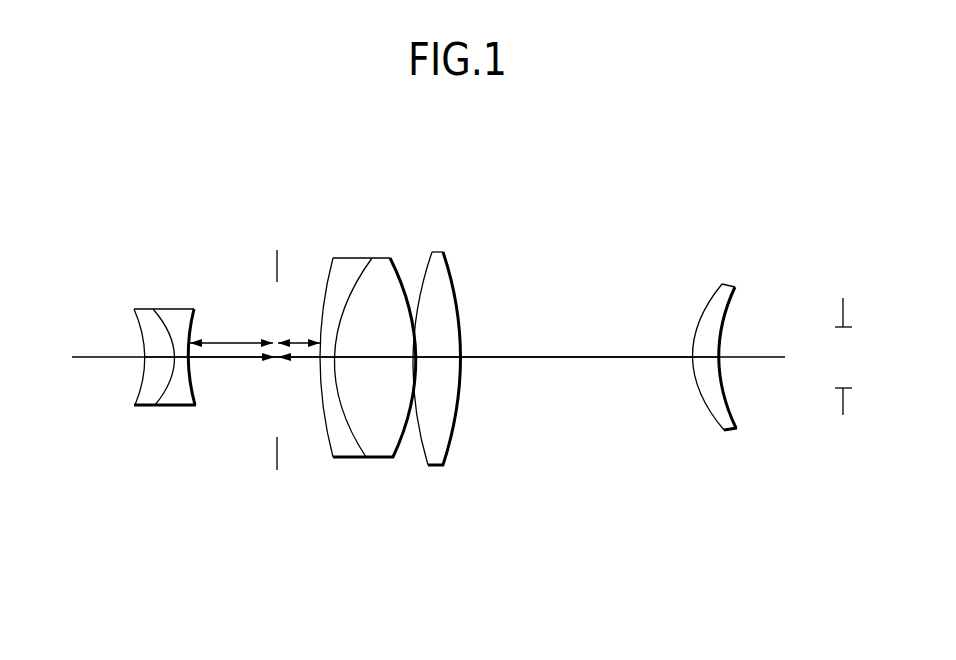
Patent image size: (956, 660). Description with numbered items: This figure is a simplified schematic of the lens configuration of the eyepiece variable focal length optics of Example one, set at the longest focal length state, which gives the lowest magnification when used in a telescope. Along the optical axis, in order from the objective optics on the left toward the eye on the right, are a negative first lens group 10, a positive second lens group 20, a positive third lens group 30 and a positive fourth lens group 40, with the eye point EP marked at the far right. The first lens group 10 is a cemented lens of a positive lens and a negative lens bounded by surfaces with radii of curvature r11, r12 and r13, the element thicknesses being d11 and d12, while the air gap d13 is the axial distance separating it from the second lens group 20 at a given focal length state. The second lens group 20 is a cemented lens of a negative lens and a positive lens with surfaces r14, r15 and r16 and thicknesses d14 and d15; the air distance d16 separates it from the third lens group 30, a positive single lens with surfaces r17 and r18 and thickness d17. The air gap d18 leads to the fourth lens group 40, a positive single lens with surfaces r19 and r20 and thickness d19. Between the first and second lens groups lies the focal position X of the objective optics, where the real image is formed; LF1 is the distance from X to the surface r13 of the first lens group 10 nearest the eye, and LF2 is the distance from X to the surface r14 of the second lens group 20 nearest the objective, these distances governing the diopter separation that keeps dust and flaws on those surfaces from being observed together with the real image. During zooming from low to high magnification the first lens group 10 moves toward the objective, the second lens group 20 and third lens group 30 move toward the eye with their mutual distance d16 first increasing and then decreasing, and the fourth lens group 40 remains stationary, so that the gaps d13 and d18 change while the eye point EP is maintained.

The first lens group 10 is at (92, 215).
The second lens group 20 is at (293, 172).
The third lens group 30 is at (435, 162).
The fourth lens group 40 is at (715, 197).
The radius of curvature of surface No. 11 r11 is at (134, 309).
The radius of curvature of surface No. 12 r12 is at (153, 309).
The radius of curvature of surface No. 13 r13 is at (194, 309).
The radius of curvature of surface No. 14 r14 is at (333, 258).
The radius of curvature of surface No. 15 r15 is at (372, 258).
The radius of curvature of surface No. 16 r16 is at (390, 258).
The radius of curvature of surface No. 17 r17 is at (432, 252).
The radius of curvature of surface No. 18 r18 is at (443, 252).
The radius of curvature of surface No. 19 r19 is at (722, 284).
The radius of curvature of surface No. 20 r20 is at (735, 287).
The thickness at surface No. 11 d11 is at (160, 357).
The thickness at surface No. 12 d12 is at (181, 357).
The distance at surface No. 13 (L12) d13 is at (255, 357).
The thickness at surface No. 14 d14 is at (327, 357).
The thickness at surface No. 15 d15 is at (377, 357).
The distance at surface No. 16 d16 is at (414, 359).
The thickness at surface No. 17 d17 is at (437, 357).
The distance at surface No. 18 (L34) d18 is at (573, 358).
The thickness at surface No. 19 d19 is at (727, 432).
The distance from focal position to first lens group LF1 is at (231, 331).
The distance from focal position to second lens group LF2 is at (299, 331).
The focal position of the objective optics X is at (278, 359).
The eye point EP is at (859, 355).